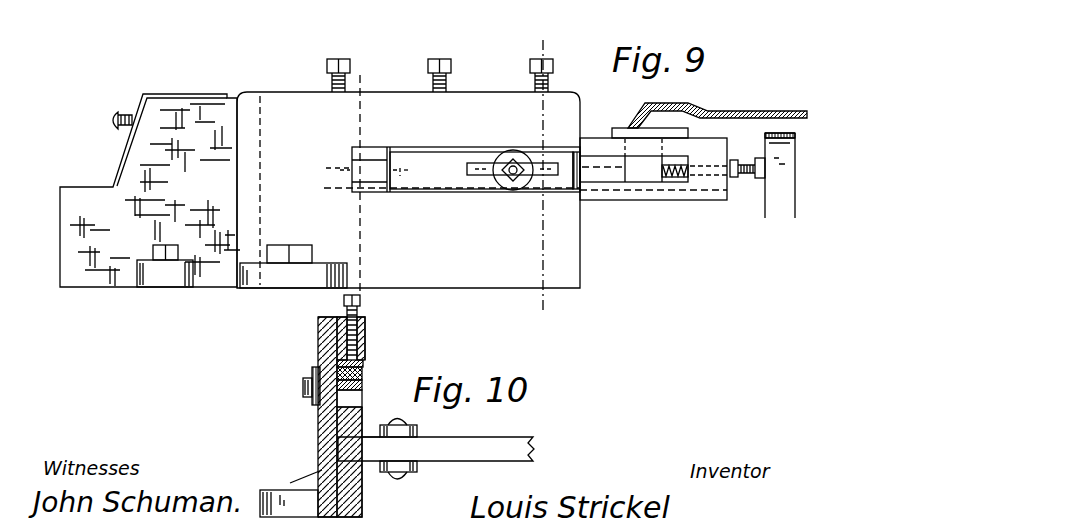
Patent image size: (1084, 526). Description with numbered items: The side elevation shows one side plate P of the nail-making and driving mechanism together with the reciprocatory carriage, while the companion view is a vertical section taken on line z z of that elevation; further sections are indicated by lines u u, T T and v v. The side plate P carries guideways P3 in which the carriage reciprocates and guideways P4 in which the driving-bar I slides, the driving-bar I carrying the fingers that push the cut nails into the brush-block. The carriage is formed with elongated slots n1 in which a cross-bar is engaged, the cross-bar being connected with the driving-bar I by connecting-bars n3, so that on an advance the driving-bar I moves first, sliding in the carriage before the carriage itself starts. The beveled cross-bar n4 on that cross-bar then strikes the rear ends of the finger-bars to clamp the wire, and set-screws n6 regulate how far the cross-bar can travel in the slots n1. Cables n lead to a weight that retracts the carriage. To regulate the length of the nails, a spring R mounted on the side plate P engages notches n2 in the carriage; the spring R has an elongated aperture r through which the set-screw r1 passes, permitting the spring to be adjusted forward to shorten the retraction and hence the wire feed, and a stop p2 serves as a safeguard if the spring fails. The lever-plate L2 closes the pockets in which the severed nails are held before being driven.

In FIG. 9, the side plate P is at (408, 173).
In FIG. 10, the side plate P is at (312, 417).
In FIG. 9, the lever-plate L2 is at (150, 190).
In FIG. 9, the section line u u is at (367, 179).
In FIG. 10, the section line u u is at (360, 325).
In FIG. 9, the section line z z is at (549, 174).
In FIG. 9, the section line T T is at (329, 168).
In FIG. 9, the section line v v is at (737, 193).
In FIG. 9, the spring R is at (428, 170).
In FIG. 10, the spring R is at (297, 386).
In FIG. 9, the elongated aperture r is at (486, 163).
In FIG. 9, the set-screw r1 is at (513, 162).
In FIG. 9, the cables n is at (717, 108).
In FIG. 10, the cables n is at (371, 425).
In FIG. 9, the elongated slots n1 is at (680, 177).
In FIG. 9, the notches n2 is at (653, 169).
In FIG. 9, the cross-bar n4 is at (650, 125).
In FIG. 9, the set-screws n6 is at (727, 160).
In FIG. 9, the stop p2 is at (780, 175).
In FIG. 10, the guideways P3 is at (361, 395).
In FIG. 10, the guideways P4 is at (305, 477).
In FIG. 10, the driving-bar I is at (436, 449).
In FIG. 10, the connecting-bars n3 is at (411, 445).